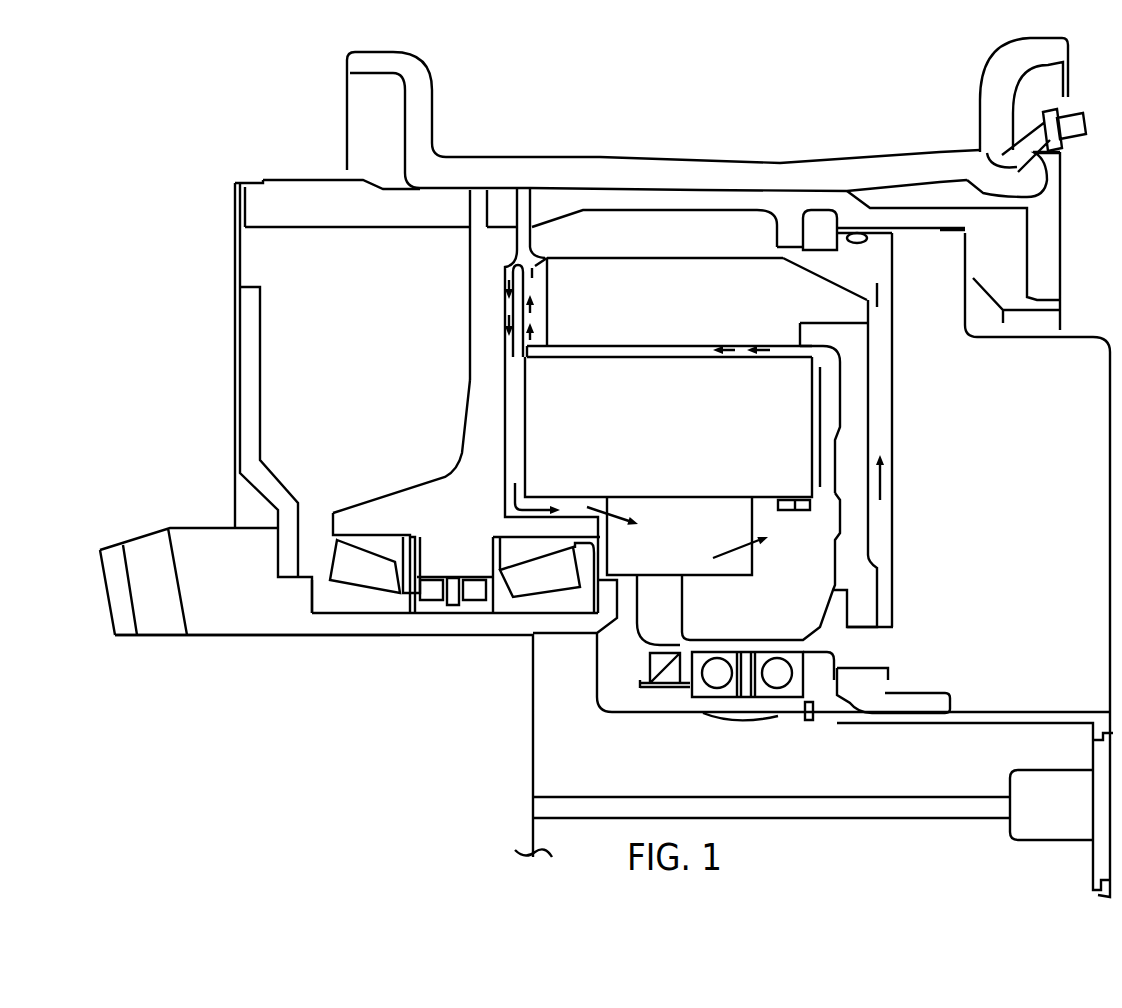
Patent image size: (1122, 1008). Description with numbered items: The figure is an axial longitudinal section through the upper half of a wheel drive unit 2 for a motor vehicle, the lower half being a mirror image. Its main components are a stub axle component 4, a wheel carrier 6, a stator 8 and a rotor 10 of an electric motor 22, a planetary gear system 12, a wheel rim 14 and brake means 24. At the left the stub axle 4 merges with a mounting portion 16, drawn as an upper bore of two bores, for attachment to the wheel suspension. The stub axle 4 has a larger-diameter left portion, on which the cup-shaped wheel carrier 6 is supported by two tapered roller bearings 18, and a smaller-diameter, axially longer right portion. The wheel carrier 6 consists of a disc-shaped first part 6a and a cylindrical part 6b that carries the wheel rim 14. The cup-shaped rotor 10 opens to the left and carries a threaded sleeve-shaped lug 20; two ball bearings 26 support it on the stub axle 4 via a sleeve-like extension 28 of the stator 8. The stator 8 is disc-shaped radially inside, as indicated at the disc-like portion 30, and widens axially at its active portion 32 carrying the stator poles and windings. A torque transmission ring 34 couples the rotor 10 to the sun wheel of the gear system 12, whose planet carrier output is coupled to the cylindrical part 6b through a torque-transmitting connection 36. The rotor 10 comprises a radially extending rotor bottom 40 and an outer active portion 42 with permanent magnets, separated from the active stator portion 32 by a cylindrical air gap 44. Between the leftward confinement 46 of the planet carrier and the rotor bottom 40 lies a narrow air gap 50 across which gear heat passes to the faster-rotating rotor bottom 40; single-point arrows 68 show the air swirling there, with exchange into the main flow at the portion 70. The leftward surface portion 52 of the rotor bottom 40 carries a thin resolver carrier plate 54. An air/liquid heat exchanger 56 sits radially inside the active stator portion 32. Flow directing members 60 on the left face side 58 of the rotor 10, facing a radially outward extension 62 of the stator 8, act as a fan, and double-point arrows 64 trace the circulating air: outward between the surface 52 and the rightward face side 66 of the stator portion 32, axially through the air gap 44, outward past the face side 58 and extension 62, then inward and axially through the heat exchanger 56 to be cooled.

The wheel drive unit 2 is at (264, 100).
The stub axle component 4 is at (369, 650).
The wheel carrier 6 is at (450, 276).
The disc-shaped first part 6a is at (477, 388).
The cylindrical part 6b is at (848, 205).
The stator 8 is at (767, 514).
The rotor 10 is at (882, 335).
The gear system 12 is at (1037, 428).
The wheel rim 14 is at (583, 170).
The mounting portion 16 is at (190, 533).
The tapered roller bearings 18 is at (357, 560).
The sleeve-shaped lug 20 is at (772, 640).
The electric motor 22 is at (746, 235).
The brake means 24 is at (338, 246).
The ball bearings 26 is at (707, 697).
The sleeve-like extension 28 is at (737, 707).
The disc-shaped portion 30 is at (633, 594).
The active stator portion 32 is at (668, 427).
The torque transmission ring 34 is at (916, 697).
The torque-transmitting connection 36 is at (788, 227).
The rotor bottom 40 is at (865, 455).
The active rotor portion 42 is at (673, 302).
The air gap 44 is at (614, 346).
The confinement 46 is at (893, 383).
The air gap 50 is at (885, 497).
The surface portion 52 is at (841, 534).
The carrier plate 54 is at (841, 425).
The air/liquid heat exchanger 56 is at (679, 536).
The face side 58 is at (537, 301).
The flow directing members 60 is at (534, 272).
The extension 62 is at (507, 317).
The double-point arrows 64 is at (735, 358).
The face side 66 is at (815, 428).
The single-point arrows 68 is at (853, 267).
The exchange portion 70 is at (532, 243).